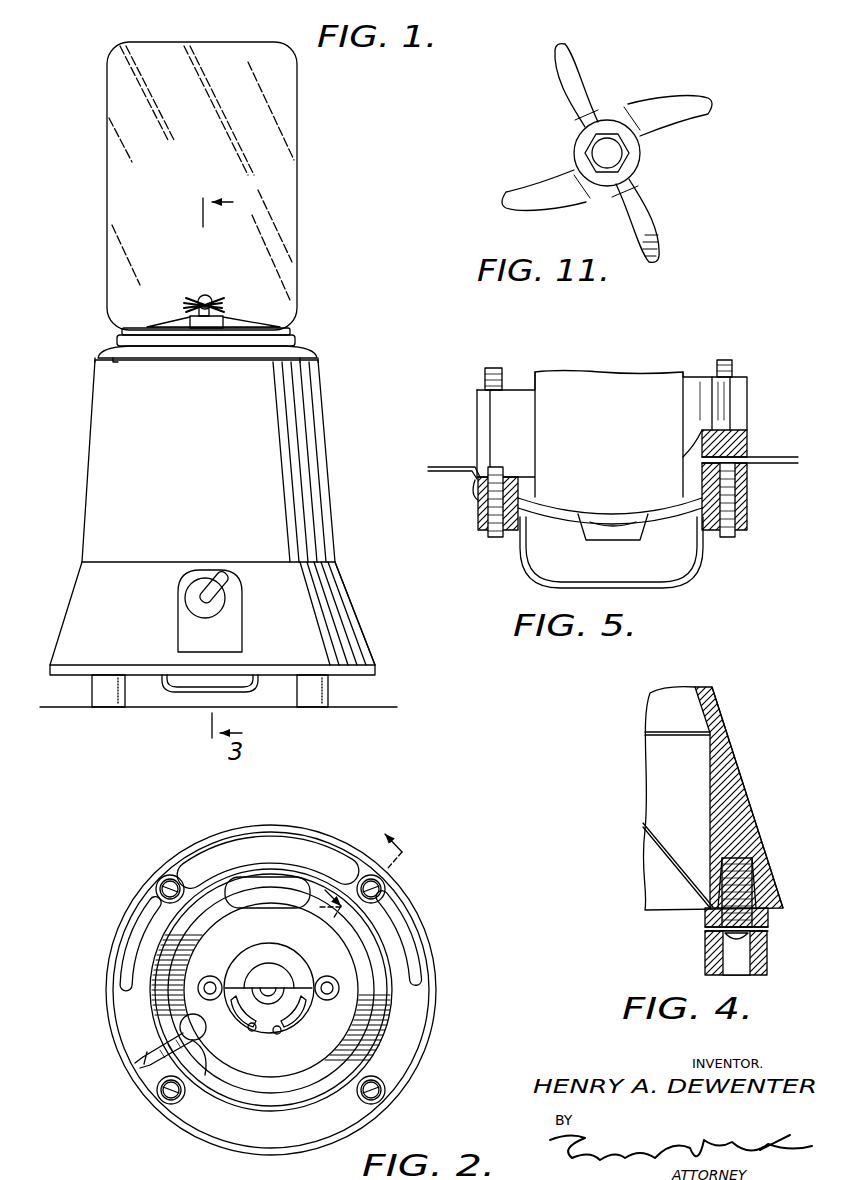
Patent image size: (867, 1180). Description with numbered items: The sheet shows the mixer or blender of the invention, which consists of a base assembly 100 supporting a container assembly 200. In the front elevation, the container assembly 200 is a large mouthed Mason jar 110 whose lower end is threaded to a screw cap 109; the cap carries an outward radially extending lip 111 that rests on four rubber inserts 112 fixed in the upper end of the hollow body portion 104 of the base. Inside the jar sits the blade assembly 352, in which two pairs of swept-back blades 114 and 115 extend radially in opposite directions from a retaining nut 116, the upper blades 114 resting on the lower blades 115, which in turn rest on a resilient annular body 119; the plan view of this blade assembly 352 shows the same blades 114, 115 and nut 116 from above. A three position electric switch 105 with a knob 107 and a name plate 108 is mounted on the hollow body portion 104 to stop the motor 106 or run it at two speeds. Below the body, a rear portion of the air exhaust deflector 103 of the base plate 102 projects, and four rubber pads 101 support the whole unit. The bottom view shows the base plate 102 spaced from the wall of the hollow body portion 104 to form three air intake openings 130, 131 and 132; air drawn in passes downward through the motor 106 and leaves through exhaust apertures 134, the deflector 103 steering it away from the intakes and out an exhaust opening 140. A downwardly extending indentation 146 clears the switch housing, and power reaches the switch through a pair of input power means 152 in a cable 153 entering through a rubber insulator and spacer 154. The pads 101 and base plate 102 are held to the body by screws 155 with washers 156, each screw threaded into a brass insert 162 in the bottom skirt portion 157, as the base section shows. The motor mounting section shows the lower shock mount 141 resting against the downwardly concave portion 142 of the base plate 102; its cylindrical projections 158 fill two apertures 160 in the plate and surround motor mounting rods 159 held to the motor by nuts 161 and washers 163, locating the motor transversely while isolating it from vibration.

In FIG. 1, the base assembly 100 is at (326, 420).
In FIG. 2, the base assembly 100 is at (108, 948).
In FIG. 1, the rubber pads 101 is at (105, 698).
In FIG. 4, the rubber pads 101 is at (708, 953).
In FIG. 2, the rubber pads 101 is at (167, 878).
In FIG. 1, the base plate 102 is at (185, 688).
In FIG. 5, the base plate 102 is at (452, 465).
In FIG. 4, the base plate 102 is at (663, 822).
In FIG. 2, the base plate 102 is at (405, 1010).
In FIG. 1, the air exhaust deflector 103 is at (228, 680).
In FIG. 5, the air exhaust deflector 103 is at (523, 567).
In FIG. 2, the air exhaust deflector 103 is at (293, 963).
In FIG. 1, the hollow body portion 104 is at (212, 517).
In FIG. 4, the hollow body portion 104 is at (746, 761).
In FIG. 2, the hollow body portion 104 is at (108, 997).
In FIG. 1, the three position electric switch 105 is at (193, 597).
In FIG. 5, the motor 106 is at (750, 388).
In FIG. 2, the motor 106 is at (269, 988).
In FIG. 1, the knob 107 is at (209, 566).
In FIG. 1, the name plate 108 is at (188, 633).
In FIG. 1, the screw cap 109 is at (305, 340).
In FIG. 1, the Mason jar 110 is at (300, 143).
In FIG. 1, the lip 111 is at (103, 347).
In FIG. 1, the rubber inserts 112 is at (97, 360).
In FIG. 1, the blades 114 is at (212, 307).
In FIG. 11, the blades 114 is at (700, 107).
In FIG. 1, the blades 115 is at (165, 320).
In FIG. 11, the blades 115 is at (567, 73).
In FIG. 1, the retaining nut 116 is at (200, 297).
In FIG. 11, the retaining nut 116 is at (597, 148).
In FIG. 1, the resilient annular body 119 is at (193, 323).
In FIG. 2, the air intake opening 130 is at (232, 838).
In FIG. 2, the air intake opening 131 is at (132, 917).
In FIG. 2, the air intake opening 132 is at (405, 925).
In FIG. 2, the exhaust apertures 134 is at (252, 1031).
In FIG. 2, the exhaust opening 140 is at (277, 1034).
In FIG. 5, the lower shock mount 141 is at (547, 506).
In FIG. 5, the downwardly concave portion 142 is at (475, 490).
In FIG. 2, the downwardly concave portion 142 is at (310, 943).
In FIG. 2, the indentation 146 is at (277, 886).
In FIG. 2, the input power means 152 is at (185, 1037).
In FIG. 2, the cable 153 is at (147, 1043).
In FIG. 2, the rubber insulator and spacer 154 is at (196, 1050).
In FIG. 4, the screws 155 is at (757, 893).
In FIG. 2, the screws 155 is at (164, 886).
In FIG. 4, the washer 156 is at (768, 925).
In FIG. 1, the bottom skirt portion 157 is at (338, 597).
In FIG. 4, the bottom skirt portion 157 is at (738, 807).
In FIG. 5, the cylindrical projections 158 is at (480, 517).
In FIG. 5, the motor mounting rods 159 is at (500, 372).
In FIG. 2, the motor mounting rods 159 is at (211, 985).
In FIG. 5, the apertures 160 is at (478, 510).
In FIG. 5, the nuts 161 is at (750, 470).
In FIG. 4, the brass insert 162 is at (752, 860).
In FIG. 5, the washers 163 is at (747, 457).
In FIG. 1, the container assembly 200 is at (323, 227).
In FIG. 1, the blade assembly 352 is at (204, 271).
In FIG. 11, the blade assembly 352 is at (657, 88).
In FIG. 5, the blade assembly 352 is at (674, 553).